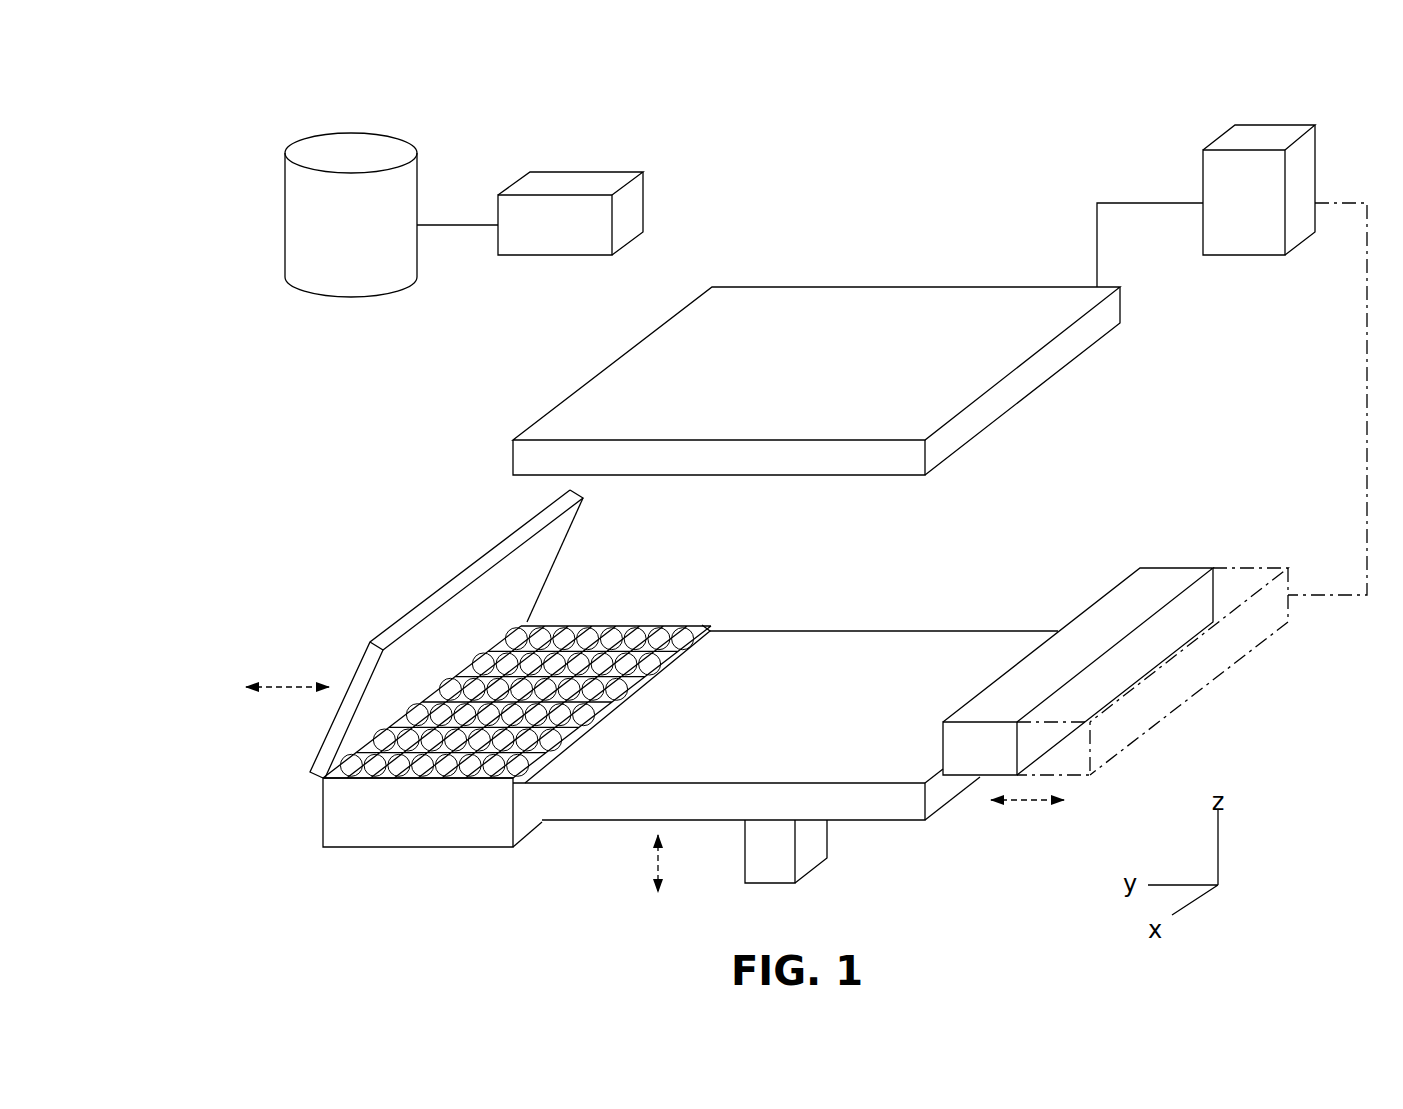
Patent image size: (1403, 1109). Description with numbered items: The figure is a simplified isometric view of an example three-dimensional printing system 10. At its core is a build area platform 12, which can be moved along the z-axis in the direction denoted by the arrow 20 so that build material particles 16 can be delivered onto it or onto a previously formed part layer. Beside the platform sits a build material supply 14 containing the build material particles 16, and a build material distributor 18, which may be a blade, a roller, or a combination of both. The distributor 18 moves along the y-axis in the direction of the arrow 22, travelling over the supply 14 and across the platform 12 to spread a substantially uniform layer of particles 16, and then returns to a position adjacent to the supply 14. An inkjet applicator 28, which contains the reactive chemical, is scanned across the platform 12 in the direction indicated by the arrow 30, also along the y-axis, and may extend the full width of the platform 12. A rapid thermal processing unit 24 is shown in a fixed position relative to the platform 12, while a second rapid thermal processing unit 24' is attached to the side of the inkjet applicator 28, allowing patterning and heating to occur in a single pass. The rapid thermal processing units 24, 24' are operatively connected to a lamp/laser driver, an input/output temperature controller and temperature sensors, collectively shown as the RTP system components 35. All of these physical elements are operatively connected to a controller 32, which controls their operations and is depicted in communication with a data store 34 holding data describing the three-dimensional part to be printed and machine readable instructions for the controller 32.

The printing system 10 is at (224, 118).
The build area platform 12 is at (880, 822).
The build material supply 14 is at (417, 847).
The build material particles 16 is at (347, 778).
The build material distributor 18 is at (443, 587).
The arrow 20 is at (658, 852).
The arrow 22 is at (278, 687).
The rapid thermal processing unit 24 is at (816, 327).
The rapid thermal processing unit 24' is at (1157, 620).
The inkjet applicator 28 is at (1178, 568).
The arrow 30 is at (1040, 800).
The controller 32 is at (577, 172).
The data store 34 is at (320, 216).
The RTP system components 35 is at (1242, 220).